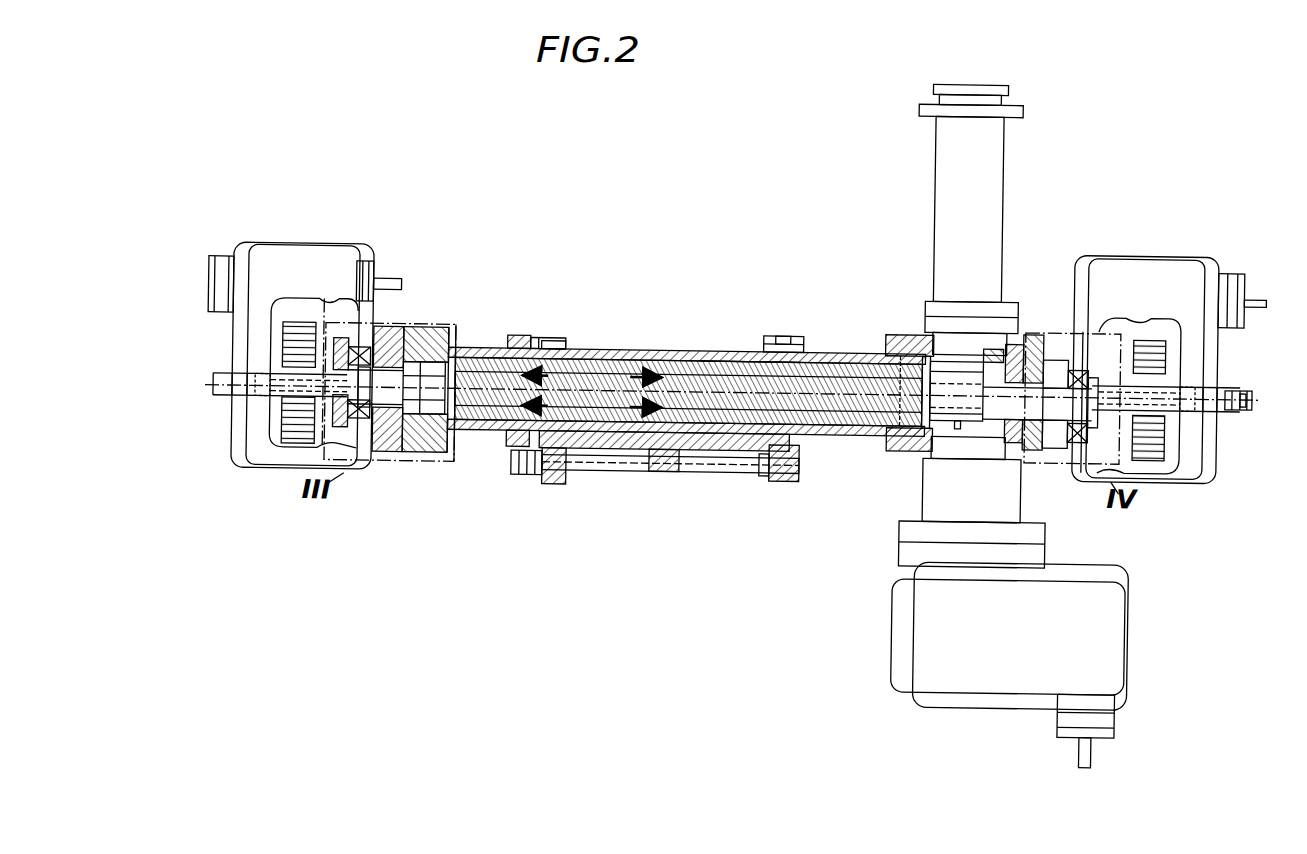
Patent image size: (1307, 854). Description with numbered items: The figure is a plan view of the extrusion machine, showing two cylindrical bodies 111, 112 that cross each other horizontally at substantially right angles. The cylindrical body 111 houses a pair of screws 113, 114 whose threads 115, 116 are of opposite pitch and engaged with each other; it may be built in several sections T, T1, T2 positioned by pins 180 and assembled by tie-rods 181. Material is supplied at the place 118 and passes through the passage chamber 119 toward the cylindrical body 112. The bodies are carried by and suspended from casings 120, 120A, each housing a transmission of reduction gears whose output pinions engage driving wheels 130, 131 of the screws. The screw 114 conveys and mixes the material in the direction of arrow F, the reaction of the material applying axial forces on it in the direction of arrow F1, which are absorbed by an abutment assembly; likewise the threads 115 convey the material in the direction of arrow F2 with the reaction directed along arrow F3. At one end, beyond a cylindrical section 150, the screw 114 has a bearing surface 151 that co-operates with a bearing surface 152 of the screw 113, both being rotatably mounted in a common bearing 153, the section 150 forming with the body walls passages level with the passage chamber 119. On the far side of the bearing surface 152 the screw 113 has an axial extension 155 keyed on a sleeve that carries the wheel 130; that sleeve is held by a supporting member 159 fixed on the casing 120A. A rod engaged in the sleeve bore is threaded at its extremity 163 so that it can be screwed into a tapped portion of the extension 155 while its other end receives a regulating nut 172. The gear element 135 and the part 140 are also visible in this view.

The cylindrical body 111 is at (697, 352).
The cylindrical body 112 is at (1003, 186).
The screw 113 is at (606, 472).
The screw 114 is at (597, 360).
The threads 115 is at (722, 433).
The threads 116 is at (745, 358).
The supply place 118 is at (452, 452).
The passage chamber 119 is at (958, 438).
The casing 120 is at (262, 460).
The casing 120A is at (1200, 247).
The driving wheel 130 is at (1172, 382).
The driving wheel 131 is at (286, 357).
The gear 135 is at (412, 372).
The output shaft 140 is at (218, 398).
The cylindrical section 150 is at (940, 372).
The bearing surface 151 is at (990, 362).
The bearing surface 152 is at (1000, 420).
The bearing 153 is at (930, 420).
The axial extension 155 is at (1170, 410).
The supporting member 159 is at (392, 438).
The threaded extremity 163 is at (1246, 404).
The regulating nut 172 is at (1240, 385).
The pin 180 is at (790, 334).
The tie-rod 181 is at (577, 472).
The arrow F is at (638, 364).
The arrow F1 is at (530, 384).
The arrow F2 is at (648, 432).
The arrow F3 is at (522, 438).
The section T is at (497, 440).
The section T1 is at (746, 440).
The section T2 is at (830, 440).